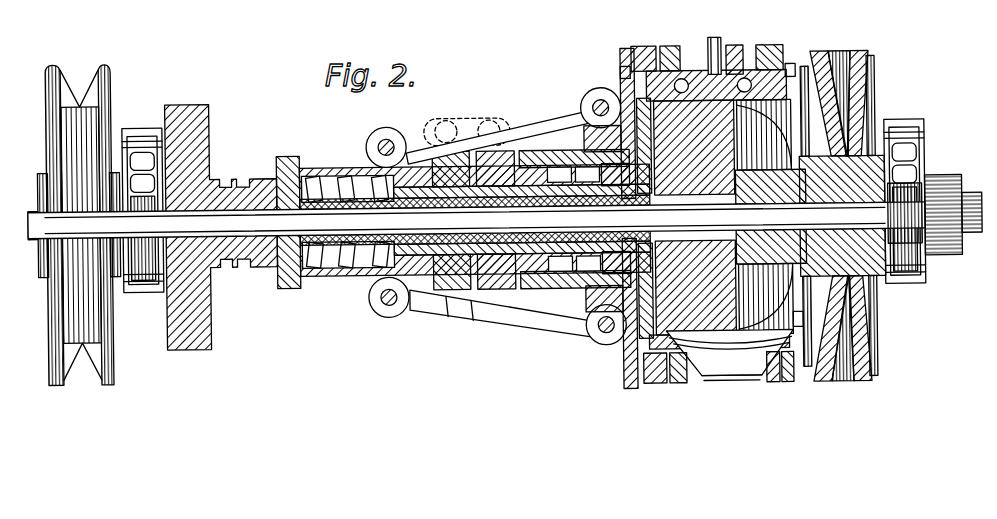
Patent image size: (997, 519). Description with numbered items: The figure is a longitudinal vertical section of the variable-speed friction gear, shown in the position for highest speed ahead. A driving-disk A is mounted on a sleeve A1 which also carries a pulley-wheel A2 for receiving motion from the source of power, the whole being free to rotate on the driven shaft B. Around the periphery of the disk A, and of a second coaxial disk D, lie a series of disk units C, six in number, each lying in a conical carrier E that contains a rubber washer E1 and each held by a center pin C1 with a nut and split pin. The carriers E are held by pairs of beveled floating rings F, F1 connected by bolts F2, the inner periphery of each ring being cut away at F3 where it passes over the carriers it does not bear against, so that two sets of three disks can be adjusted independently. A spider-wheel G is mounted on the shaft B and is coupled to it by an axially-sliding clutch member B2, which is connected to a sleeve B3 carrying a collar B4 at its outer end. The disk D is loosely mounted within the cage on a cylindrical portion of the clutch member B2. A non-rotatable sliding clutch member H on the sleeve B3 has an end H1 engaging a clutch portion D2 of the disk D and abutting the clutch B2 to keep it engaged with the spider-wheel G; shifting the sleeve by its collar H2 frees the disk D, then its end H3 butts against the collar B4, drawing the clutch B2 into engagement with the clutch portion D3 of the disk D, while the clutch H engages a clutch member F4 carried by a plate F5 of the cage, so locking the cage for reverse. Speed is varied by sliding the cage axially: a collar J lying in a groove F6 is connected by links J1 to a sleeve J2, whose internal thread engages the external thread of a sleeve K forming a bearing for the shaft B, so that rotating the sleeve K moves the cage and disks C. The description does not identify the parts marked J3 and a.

The driving-disk A is at (845, 95).
The sleeve A1 is at (836, 92).
The pulley-wheel A2 is at (802, 112).
The driven shaft B is at (580, 261).
The axially-sliding clutch member B2 is at (718, 380).
The sleeve B3 is at (462, 290).
The collar B4 is at (345, 270).
The disk unit C is at (748, 58).
The center pin C1 is at (722, 50).
The disk D is at (625, 105).
The clutch portion D2 is at (640, 320).
The clutch portion D3 is at (645, 385).
The conical carrier E is at (698, 72).
The rubber washer E1 is at (762, 62).
The floating ring F is at (672, 62).
The floating ring F1 is at (806, 38).
The bolts F2 is at (800, 342).
The cut-away portion F3 is at (795, 165).
The clutch member F4 is at (497, 136).
The plate F5 is at (650, 342).
The groove F6 is at (580, 300).
The spider-wheel G is at (672, 348).
The non-rotatable clutch member H is at (502, 318).
The end of clutch member H1 is at (590, 333).
The collar H2 is at (440, 292).
The end of sleeve H3 is at (378, 302).
The collar J is at (584, 108).
The links J1 is at (455, 132).
The sleeve J2 is at (323, 172).
The pivot pin J3 is at (413, 140).
The sleeve K is at (228, 186).
The shaft a is at (695, 380).